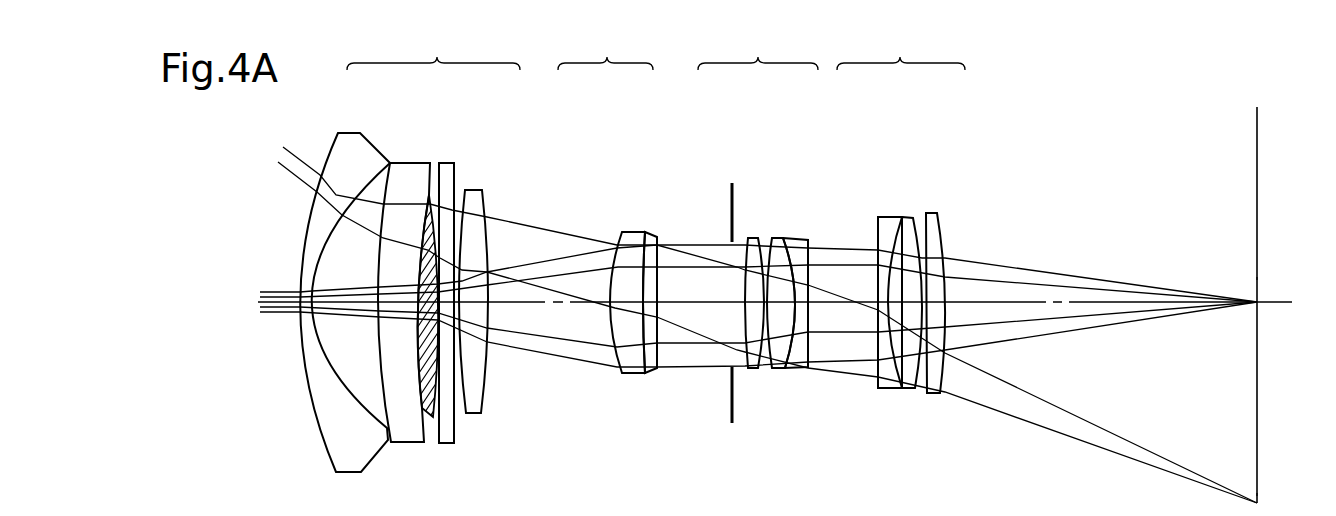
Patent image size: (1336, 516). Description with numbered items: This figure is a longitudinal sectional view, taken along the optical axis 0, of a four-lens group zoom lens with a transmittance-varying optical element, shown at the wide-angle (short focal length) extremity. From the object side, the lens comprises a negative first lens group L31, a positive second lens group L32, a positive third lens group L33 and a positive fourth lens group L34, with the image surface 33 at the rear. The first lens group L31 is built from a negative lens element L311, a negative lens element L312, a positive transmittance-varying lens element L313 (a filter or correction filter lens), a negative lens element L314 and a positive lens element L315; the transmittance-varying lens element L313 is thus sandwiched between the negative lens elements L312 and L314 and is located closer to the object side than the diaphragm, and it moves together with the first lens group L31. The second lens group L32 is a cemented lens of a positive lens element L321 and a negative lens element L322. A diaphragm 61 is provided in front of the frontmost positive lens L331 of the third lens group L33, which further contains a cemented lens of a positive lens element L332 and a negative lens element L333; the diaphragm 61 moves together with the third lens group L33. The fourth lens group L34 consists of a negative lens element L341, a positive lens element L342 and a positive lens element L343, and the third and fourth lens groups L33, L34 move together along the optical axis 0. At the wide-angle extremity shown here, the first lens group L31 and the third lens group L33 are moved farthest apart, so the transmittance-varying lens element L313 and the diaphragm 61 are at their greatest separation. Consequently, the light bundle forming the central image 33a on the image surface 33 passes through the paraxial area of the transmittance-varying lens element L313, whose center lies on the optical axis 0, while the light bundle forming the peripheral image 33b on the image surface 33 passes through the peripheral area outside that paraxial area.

The negative first lens group L31 is at (408, 261).
The negative lens element L311 is at (358, 155).
The negative lens element L312 is at (402, 177).
The transmittance-varying lens element L313 is at (418, 410).
The negative lens element L314 is at (450, 177).
The positive lens element L315 is at (480, 188).
The positive second lens group L32 is at (609, 201).
The positive lens element L321 is at (625, 232).
The negative lens element L322 is at (650, 232).
The diaphragm 61 is at (731, 422).
The positive third lens group L33 is at (757, 198).
The positive lens L331 is at (751, 238).
The positive lens element L332 is at (780, 238).
The negative lens element L333 is at (801, 238).
The positive fourth lens group L34 is at (900, 211).
The negative lens element L341 is at (888, 217).
The positive lens element L342 is at (910, 220).
The positive lens element L343 is at (937, 212).
The image surface 33 is at (1258, 128).
The central image 33a is at (1258, 277).
The peripheral image 33b is at (1257, 493).
The optical axis 0 is at (783, 303).